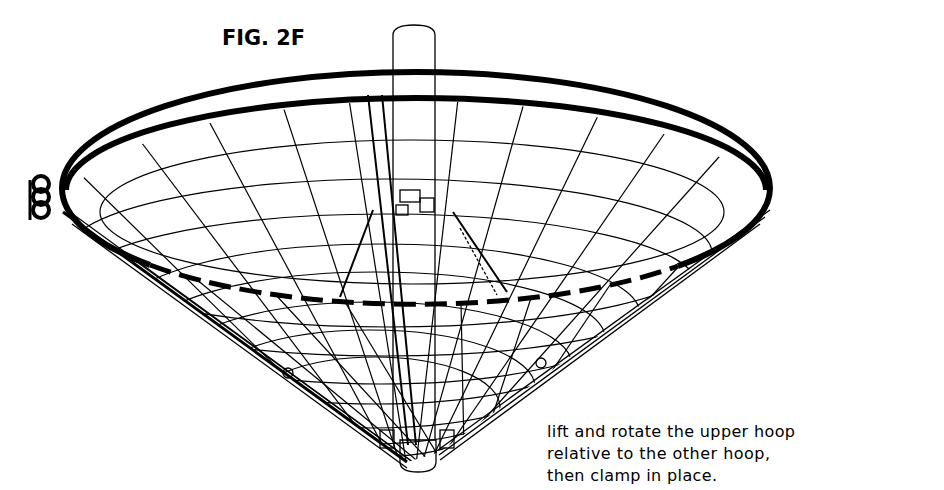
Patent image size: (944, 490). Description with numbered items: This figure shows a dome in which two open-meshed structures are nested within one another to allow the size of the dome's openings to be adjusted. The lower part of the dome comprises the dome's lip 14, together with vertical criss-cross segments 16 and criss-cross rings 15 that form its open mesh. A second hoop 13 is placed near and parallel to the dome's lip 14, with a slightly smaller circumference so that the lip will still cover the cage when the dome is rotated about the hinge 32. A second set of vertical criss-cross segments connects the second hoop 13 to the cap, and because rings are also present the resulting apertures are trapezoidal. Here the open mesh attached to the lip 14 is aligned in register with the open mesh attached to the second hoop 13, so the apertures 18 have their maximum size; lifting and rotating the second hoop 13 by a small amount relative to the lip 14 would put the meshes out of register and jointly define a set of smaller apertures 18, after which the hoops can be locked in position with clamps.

The second hoop 13 is at (737, 128).
The dome's lip 14 is at (775, 210).
The criss-cross rings 15 is at (676, 195).
The vertical criss-cross segments 16 is at (208, 233).
The apertures 18 is at (293, 287).
The hinge 32 is at (40, 228).